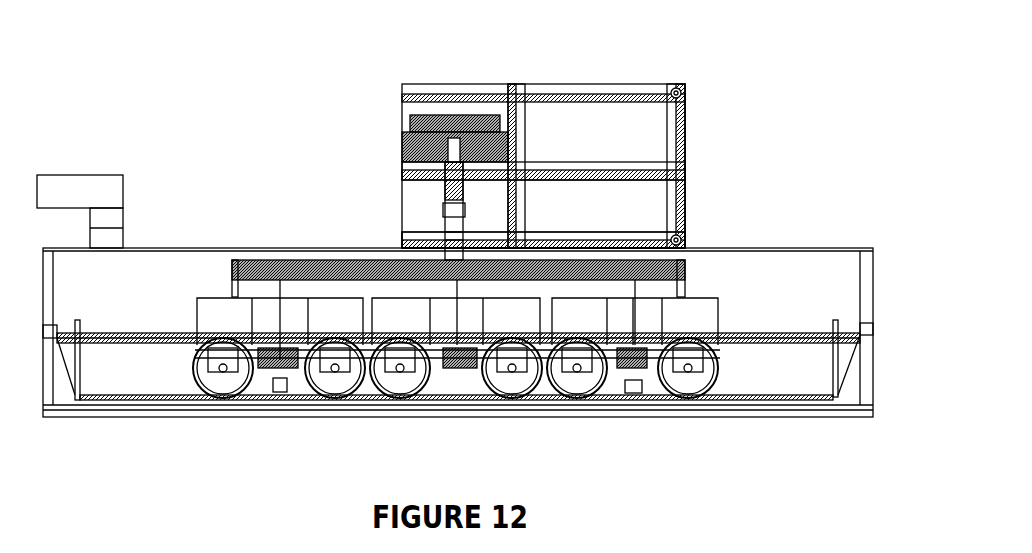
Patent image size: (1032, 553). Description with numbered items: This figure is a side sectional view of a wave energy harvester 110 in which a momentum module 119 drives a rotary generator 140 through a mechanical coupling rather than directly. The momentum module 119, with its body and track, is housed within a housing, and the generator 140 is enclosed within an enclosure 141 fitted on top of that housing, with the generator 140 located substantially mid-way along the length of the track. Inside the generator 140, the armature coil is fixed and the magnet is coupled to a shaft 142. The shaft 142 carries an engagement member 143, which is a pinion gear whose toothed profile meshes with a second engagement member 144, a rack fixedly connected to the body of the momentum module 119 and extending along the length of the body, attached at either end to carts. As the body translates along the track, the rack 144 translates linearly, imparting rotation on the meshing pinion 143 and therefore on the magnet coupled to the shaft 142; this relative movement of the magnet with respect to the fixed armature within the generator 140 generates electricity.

The wave energy harvester 110 is at (778, 82).
The momentum module 119 is at (342, 312).
The rotary generator 140 is at (408, 128).
The enclosure 141 is at (685, 187).
The shaft 142 is at (437, 178).
The engagement member 143 is at (437, 250).
The second engagement member 144 is at (285, 267).